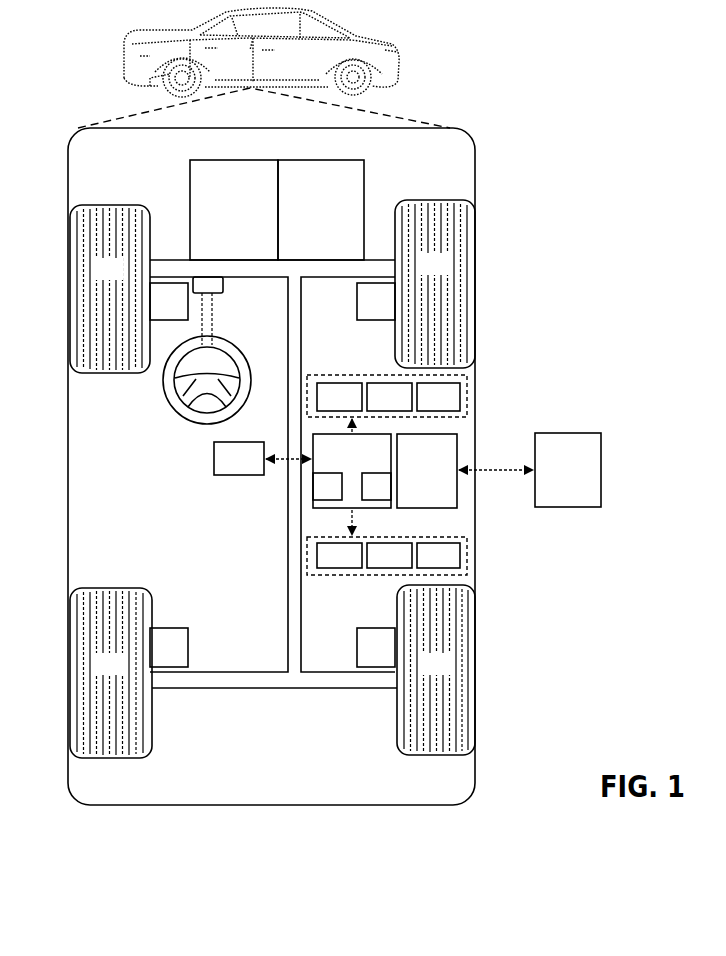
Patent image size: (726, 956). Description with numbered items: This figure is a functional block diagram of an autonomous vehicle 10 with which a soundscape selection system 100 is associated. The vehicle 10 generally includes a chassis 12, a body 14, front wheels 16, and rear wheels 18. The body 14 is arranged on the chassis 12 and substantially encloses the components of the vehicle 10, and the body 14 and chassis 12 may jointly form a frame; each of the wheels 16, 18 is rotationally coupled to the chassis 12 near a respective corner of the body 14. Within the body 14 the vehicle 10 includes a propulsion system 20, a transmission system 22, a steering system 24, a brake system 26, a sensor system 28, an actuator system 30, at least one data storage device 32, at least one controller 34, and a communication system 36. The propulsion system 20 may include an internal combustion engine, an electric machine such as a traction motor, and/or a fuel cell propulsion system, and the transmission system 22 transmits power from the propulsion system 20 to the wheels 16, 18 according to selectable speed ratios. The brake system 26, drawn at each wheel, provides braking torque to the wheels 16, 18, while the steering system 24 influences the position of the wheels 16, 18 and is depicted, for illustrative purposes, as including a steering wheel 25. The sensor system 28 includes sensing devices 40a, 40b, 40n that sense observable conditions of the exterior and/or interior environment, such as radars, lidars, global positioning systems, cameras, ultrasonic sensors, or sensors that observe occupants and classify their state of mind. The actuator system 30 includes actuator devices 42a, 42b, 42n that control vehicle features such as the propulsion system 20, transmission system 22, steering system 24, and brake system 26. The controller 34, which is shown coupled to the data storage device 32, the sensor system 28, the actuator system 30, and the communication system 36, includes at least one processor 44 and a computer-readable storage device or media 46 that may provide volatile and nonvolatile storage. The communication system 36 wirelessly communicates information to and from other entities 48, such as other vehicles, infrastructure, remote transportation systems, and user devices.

The vehicle 10 is at (122, 52).
The soundscape selection system 100 is at (500, 320).
The chassis 12 is at (296, 690).
The body 14 is at (68, 433).
The front wheels 16 is at (119, 279).
The rear wheels 18 is at (121, 674).
The propulsion system 20 is at (244, 222).
The transmission system 22 is at (331, 222).
The steering system 24 is at (184, 434).
The steering wheel 25 is at (236, 343).
The brake system 26 is at (179, 310).
The sensor system 28 is at (346, 374).
The actuator system 30 is at (331, 577).
The data storage device 32 is at (249, 467).
The controller 34 is at (362, 469).
The communication system 36 is at (437, 478).
The sensing device 40a is at (354, 406).
The sensing device 40b is at (404, 406).
The sensing device 40n is at (453, 406).
The actuator device 42a is at (354, 565).
The actuator device 42b is at (404, 565).
The actuator device 42n is at (453, 565).
The processor 44 is at (337, 495).
The computer-readable storage device or media 46 is at (386, 495).
The other entities 48 is at (578, 478).